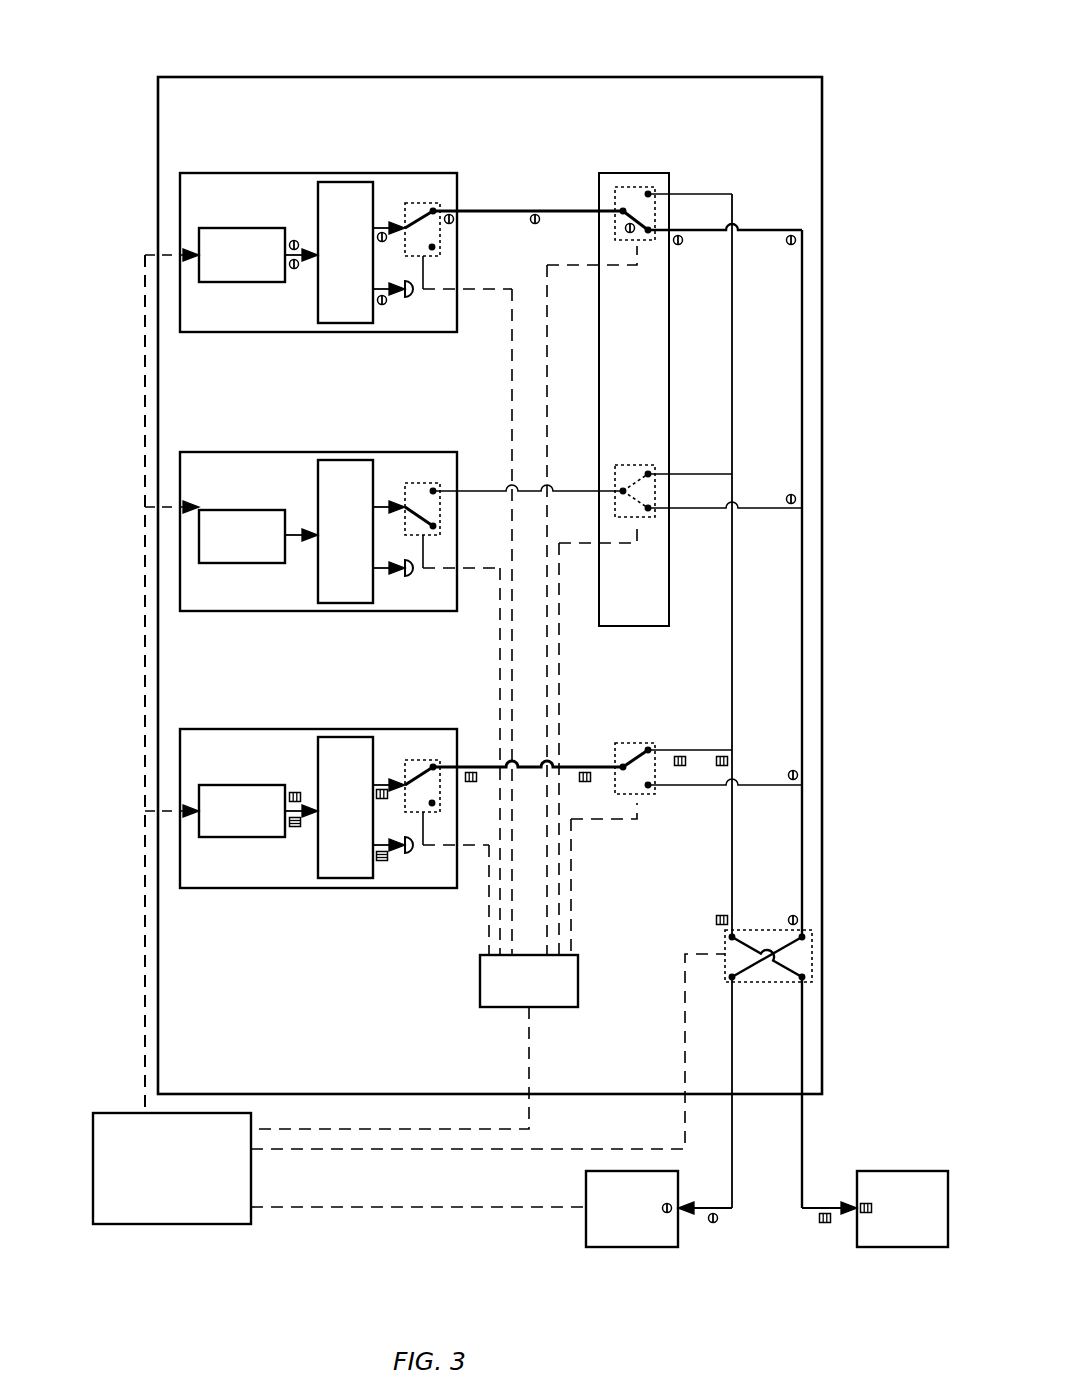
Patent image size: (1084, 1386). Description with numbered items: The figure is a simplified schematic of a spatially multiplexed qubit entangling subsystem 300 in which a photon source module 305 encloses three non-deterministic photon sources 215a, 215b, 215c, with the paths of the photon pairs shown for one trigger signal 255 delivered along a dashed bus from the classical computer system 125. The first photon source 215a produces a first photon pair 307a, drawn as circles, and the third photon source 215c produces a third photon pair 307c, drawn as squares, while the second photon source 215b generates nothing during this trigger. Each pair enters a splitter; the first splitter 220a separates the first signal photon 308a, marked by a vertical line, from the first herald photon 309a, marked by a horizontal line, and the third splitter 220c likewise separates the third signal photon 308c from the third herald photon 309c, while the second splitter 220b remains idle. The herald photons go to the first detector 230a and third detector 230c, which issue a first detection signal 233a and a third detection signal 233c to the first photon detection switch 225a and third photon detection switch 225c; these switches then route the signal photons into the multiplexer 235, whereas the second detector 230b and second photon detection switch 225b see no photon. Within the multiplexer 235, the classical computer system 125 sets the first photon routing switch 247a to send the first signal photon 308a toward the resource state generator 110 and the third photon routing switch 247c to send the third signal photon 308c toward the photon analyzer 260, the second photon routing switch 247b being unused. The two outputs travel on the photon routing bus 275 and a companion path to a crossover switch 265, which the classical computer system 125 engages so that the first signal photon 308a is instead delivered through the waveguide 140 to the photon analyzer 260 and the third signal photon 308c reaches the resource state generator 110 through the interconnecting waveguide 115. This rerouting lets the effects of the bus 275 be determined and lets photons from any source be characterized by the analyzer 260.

The qubit entangling subsystem 300 is at (168, 39).
The photonic integrated circuit chip 305 is at (572, 77).
The first photon source 215a is at (198, 243).
The second photon source 215b is at (198, 519).
The third photon source 215c is at (198, 799).
The first photon pair 307a is at (280, 219).
The third photon pair 307c is at (280, 775).
The first signal photon 308a is at (297, 240).
The third signal photon 308c is at (297, 790).
The first herald photon 309a is at (294, 270).
The third herald photon 309c is at (294, 828).
The first splitter 220a is at (318, 303).
The second splitter 220b is at (318, 565).
The third splitter 220c is at (318, 860).
The first photon detection switch 225a is at (425, 203).
The second photon detection switch 225b is at (425, 483).
The third photon detection switch 225c is at (425, 760).
The first detector 230a is at (408, 298).
The second detector 230b is at (409, 577).
The third detector 230c is at (408, 855).
The first detection signal 233a is at (428, 265).
The third detection signal 233c is at (426, 848).
The multiplexer 235 is at (633, 173).
The first photon routing switch 247a is at (656, 214).
The second photon routing switch 247b is at (645, 519).
The third photon routing switch 247c is at (640, 797).
The trigger signal 255 is at (145, 435).
The crossover switch 265 is at (815, 930).
The photon routing bus 275 is at (802, 620).
The classical computer system 125 is at (205, 1224).
The photon analyzer 260 is at (585, 1247).
The first output link 140 is at (733, 1212).
The resource state generator 110 is at (893, 1247).
The interconnecting waveguide 115 is at (808, 1205).